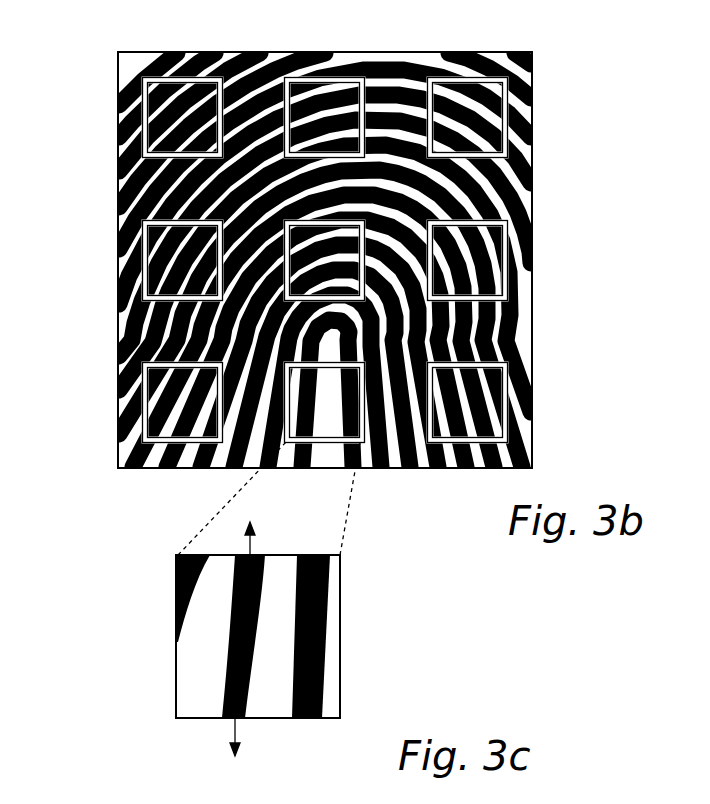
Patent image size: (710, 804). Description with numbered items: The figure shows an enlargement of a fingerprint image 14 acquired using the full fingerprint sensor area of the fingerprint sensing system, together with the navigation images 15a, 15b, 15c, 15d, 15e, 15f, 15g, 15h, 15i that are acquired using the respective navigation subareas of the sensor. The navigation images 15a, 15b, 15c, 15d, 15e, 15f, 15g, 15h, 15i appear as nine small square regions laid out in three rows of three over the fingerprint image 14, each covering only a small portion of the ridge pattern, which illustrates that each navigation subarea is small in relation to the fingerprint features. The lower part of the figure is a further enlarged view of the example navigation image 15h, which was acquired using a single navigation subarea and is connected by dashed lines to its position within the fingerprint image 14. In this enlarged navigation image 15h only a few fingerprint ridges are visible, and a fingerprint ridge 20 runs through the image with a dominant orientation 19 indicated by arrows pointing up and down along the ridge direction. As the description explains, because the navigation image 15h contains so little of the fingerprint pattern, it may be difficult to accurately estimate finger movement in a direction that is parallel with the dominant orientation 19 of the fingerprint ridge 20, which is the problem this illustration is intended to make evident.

In FIG. 3B, the fingerprint image 14 is at (538, 64).
In FIG. 3B, the navigation image 15a is at (147, 108).
In FIG. 3B, the navigation image 15b is at (350, 156).
In FIG. 3B, the navigation image 15c is at (507, 123).
In FIG. 3B, the navigation image 15d is at (147, 260).
In FIG. 3B, the navigation image 15e is at (345, 298).
In FIG. 3B, the navigation image 15f is at (507, 276).
In FIG. 3B, the navigation image 15g is at (147, 407).
In FIG. 3B, the navigation image 15h is at (352, 443).
In FIG. 3C, the navigation image 15h is at (340, 638).
In FIG. 3B, the navigation image 15i is at (507, 425).
In FIG. 3C, the dominant orientation 19 is at (233, 732).
In FIG. 3C, the fingerprint ridge 20 is at (247, 697).